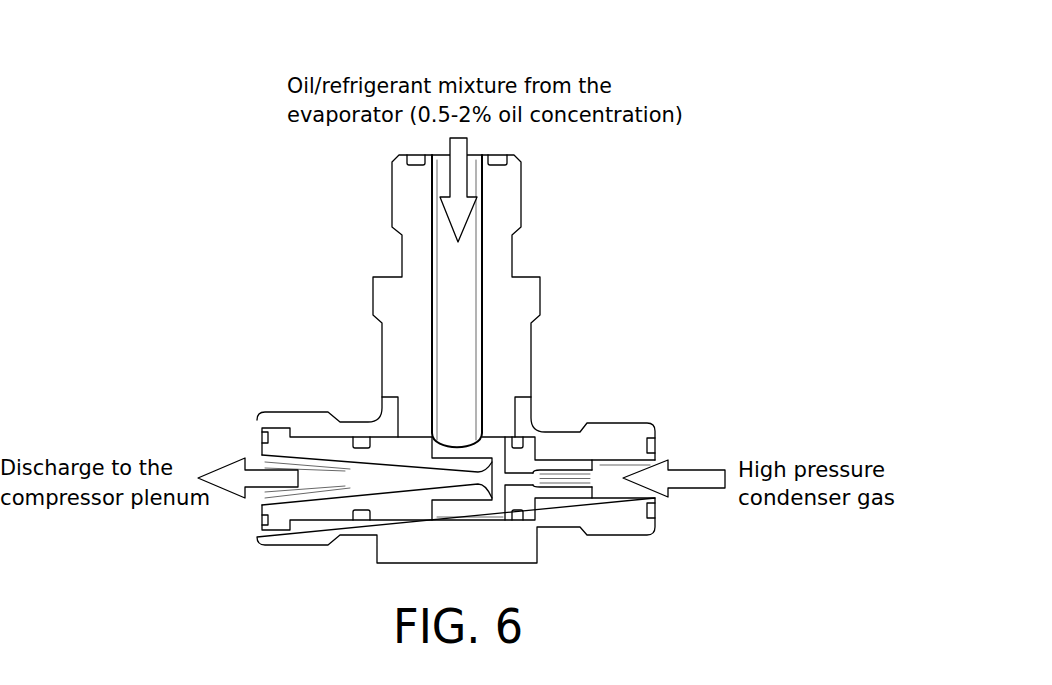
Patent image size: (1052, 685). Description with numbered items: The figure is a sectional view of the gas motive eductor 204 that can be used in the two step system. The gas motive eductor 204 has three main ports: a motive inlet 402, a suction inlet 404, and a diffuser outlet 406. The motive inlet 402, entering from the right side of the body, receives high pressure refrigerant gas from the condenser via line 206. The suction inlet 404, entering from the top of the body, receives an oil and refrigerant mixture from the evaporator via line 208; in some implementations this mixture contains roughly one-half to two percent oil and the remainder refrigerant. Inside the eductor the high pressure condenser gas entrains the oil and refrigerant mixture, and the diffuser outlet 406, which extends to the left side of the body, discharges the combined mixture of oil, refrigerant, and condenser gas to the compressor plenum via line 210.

The gas motive eductor 204 is at (171, 93).
The line 206 is at (685, 488).
The line 208 is at (467, 183).
The line 210 is at (265, 487).
The motive inlet 402 is at (602, 480).
The suction inlet 404 is at (455, 323).
The diffuser outlet 406 is at (338, 483).